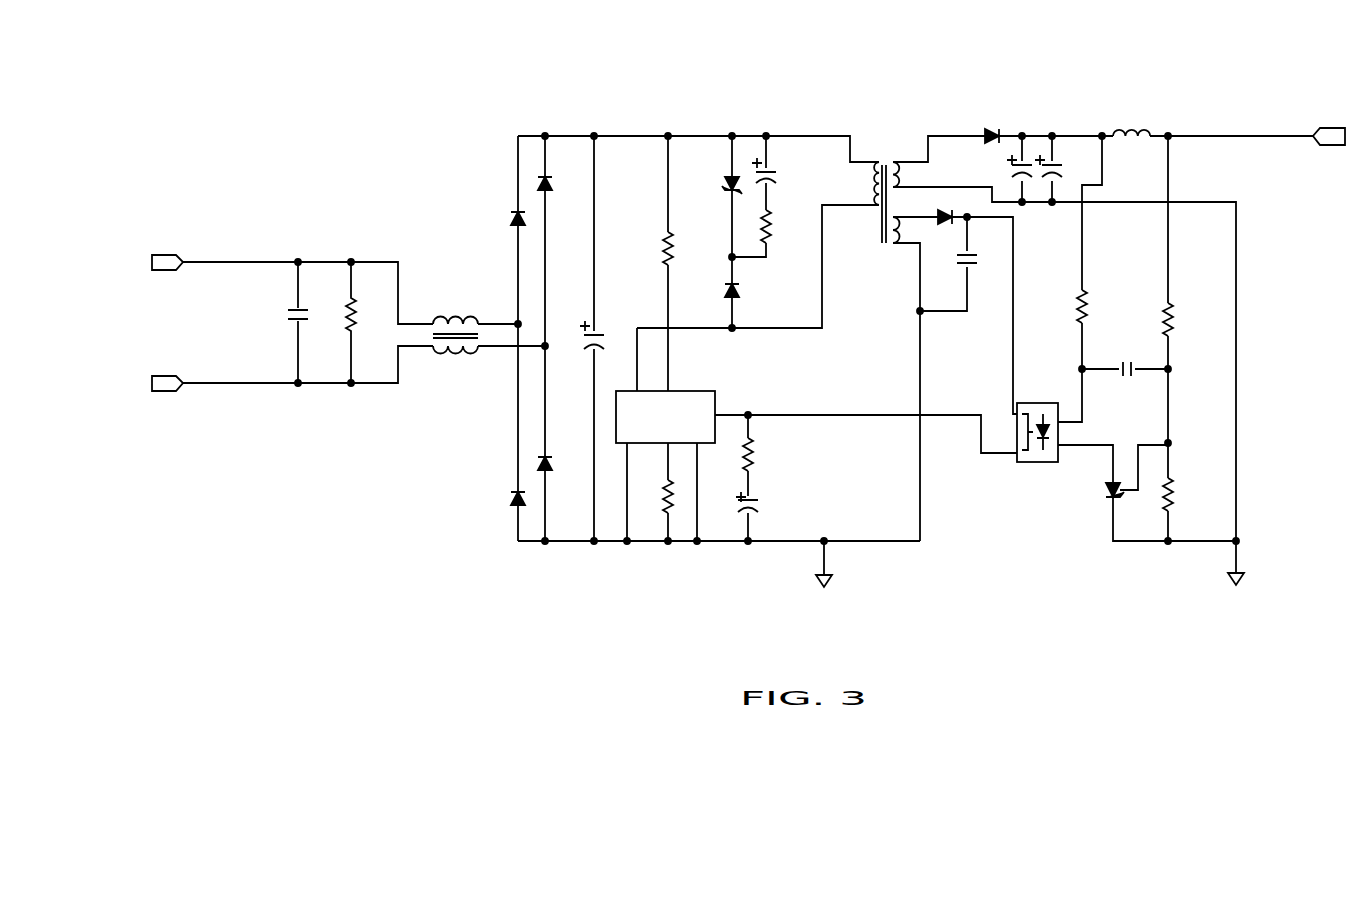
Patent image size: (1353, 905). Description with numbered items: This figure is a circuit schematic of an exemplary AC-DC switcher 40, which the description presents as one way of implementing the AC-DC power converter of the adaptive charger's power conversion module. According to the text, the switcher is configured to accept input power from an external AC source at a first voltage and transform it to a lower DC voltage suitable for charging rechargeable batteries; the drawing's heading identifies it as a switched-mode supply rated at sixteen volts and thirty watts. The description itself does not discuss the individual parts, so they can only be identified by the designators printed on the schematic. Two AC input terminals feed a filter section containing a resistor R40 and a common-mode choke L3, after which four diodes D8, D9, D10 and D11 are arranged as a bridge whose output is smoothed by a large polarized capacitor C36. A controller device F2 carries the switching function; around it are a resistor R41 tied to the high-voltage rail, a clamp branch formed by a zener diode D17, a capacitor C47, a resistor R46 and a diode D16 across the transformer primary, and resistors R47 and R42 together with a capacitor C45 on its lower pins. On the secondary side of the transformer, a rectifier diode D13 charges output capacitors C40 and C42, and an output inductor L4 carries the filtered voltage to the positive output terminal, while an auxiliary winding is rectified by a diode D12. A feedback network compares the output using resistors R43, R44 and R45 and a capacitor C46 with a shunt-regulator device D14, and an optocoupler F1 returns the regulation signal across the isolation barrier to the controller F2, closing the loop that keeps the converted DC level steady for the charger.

The AC-DC switcher 40 is at (879, 73).
The resistor R40 is at (369, 322).
The common-mode choke L3 is at (458, 311).
The rectifier diode D8 is at (504, 219).
The rectifier diode D9 is at (504, 500).
The rectifier diode D10 is at (564, 185).
The rectifier diode D11 is at (562, 464).
The bulk capacitor C36 is at (606, 329).
The resistor R41 is at (648, 248).
The zener diode D17 is at (712, 183).
The capacitor C47 is at (782, 174).
The resistor R46 is at (785, 226).
The diode D16 is at (713, 295).
The switching controller F2 is at (660, 413).
The resistor R47 is at (652, 490).
The resistor R42 is at (730, 454).
The capacitor C45 is at (764, 506).
The output rectifier diode D13 is at (990, 123).
The diode D12 is at (944, 206).
The output capacitor C40 is at (1000, 167).
The output capacitor C42 is at (1066, 167).
The output inductor L4 is at (1131, 120).
The resistor R43 is at (1064, 306).
The resistor R44 is at (1150, 319).
The capacitor C46 is at (1125, 357).
The optocoupler F1 is at (1036, 420).
The TL-431 shunt regulator D14 is at (1078, 498).
The resistor R45 is at (1189, 494).